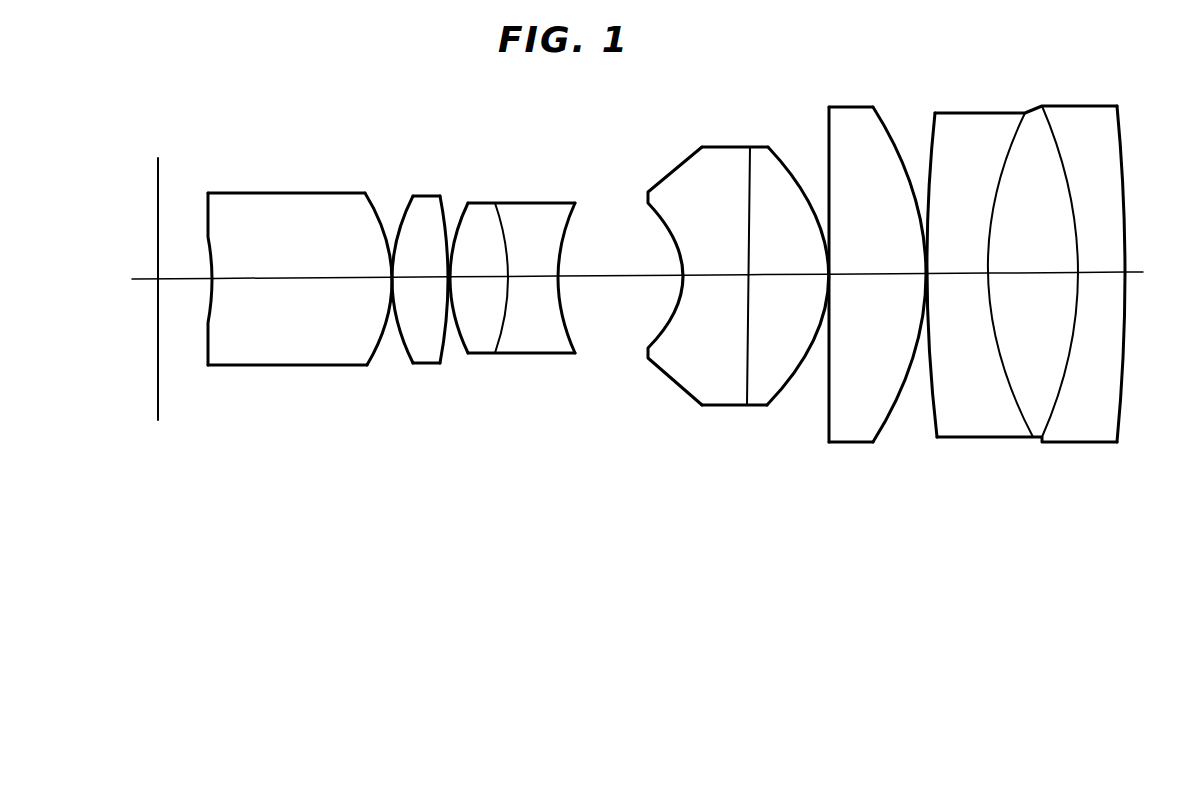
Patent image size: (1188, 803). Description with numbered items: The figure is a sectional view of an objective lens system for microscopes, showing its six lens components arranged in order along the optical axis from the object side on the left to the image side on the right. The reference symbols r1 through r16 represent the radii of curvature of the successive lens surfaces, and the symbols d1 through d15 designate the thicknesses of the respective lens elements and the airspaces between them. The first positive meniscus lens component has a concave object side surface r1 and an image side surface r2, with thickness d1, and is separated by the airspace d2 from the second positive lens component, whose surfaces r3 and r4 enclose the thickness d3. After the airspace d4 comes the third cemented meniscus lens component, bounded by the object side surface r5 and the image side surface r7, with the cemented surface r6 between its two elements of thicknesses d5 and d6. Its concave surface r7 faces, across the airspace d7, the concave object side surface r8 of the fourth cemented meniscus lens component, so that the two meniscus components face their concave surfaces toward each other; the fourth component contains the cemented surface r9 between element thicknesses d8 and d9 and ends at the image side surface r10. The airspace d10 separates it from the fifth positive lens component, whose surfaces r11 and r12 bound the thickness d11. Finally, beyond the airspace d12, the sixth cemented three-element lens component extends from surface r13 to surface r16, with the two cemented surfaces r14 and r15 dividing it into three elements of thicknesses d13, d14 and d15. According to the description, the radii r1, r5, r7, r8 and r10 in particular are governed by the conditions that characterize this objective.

The radius of curvature of object side surface of first lens component r1 is at (208, 345).
The radius of curvature of lens surface r2 is at (374, 357).
The radius of curvature of lens surface r3 is at (404, 348).
The radius of curvature of lens surface r4 is at (446, 353).
The radius of curvature of object side surface of third lens component r5 is at (463, 348).
The radius of curvature of lens surface r6 is at (502, 340).
The radius of curvature of image side surface of third lens component r7 is at (577, 340).
The radius of curvature of object side surface of fourth lens component r8 is at (673, 310).
The radius of curvature of lens surface r9 is at (743, 383).
The radius of curvature of image side surface of fourth lens component r10 is at (793, 383).
The radius of curvature of lens surface r11 is at (830, 392).
The radius of curvature of lens surface r12 is at (892, 418).
The radius of curvature of lens surface r13 is at (930, 410).
The radius of curvature of lens surface r14 is at (1013, 403).
The radius of curvature of lens surface r15 is at (1055, 413).
The radius of curvature of lens surface r16 is at (1122, 423).
The lens element thickness d1 is at (272, 278).
The airspace d2 is at (391, 265).
The lens element thickness d3 is at (412, 277).
The airspace d4 is at (448, 270).
The lens element thickness d5 is at (476, 277).
The lens element thickness d6 is at (530, 277).
The airspace d7 is at (598, 277).
The lens element thickness d8 is at (708, 276).
The lens element thickness d9 is at (782, 275).
The airspace d10 is at (830, 275).
The lens element thickness d11 is at (887, 274).
The airspace d12 is at (925, 262).
The lens element thickness d13 is at (948, 273).
The lens element thickness d14 is at (1028, 273).
The lens element thickness d15 is at (1107, 272).